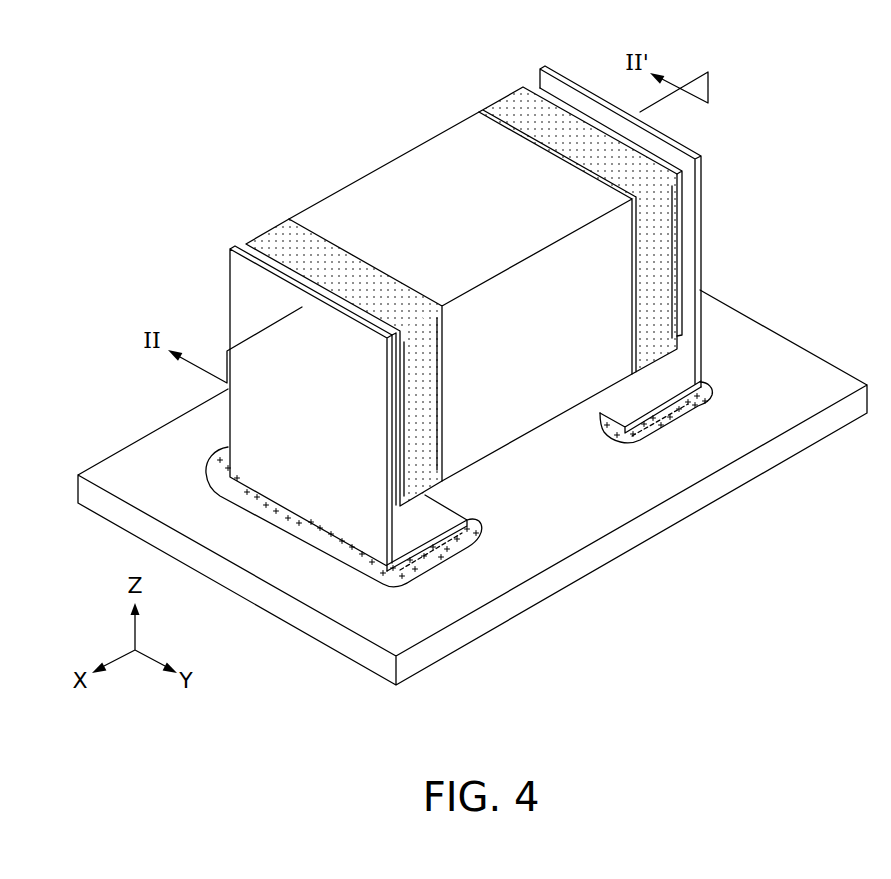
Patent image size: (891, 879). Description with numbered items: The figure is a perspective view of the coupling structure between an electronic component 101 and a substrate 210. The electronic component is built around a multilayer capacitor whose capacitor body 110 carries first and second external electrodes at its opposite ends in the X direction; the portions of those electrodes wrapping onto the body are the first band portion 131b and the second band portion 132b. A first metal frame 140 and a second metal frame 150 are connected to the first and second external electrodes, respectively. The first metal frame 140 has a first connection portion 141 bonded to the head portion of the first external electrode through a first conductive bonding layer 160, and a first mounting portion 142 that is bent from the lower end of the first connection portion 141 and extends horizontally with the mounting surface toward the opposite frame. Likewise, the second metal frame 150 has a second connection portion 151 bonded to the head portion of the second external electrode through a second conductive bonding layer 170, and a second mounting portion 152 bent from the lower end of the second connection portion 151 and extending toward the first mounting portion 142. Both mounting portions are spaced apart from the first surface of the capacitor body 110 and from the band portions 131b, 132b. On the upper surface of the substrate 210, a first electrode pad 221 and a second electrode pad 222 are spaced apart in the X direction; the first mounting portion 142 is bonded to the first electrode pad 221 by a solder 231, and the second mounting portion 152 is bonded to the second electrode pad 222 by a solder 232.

The multilayer ceramic electronic component 101 is at (452, 269).
The capacitor body 110 is at (375, 200).
The first band portion 131b is at (277, 243).
The second band portion 132b is at (512, 103).
The first metal frame 140 is at (321, 462).
The first connection portion 141 is at (242, 427).
The first mounting portion 142 is at (432, 522).
The second metal frame 150 is at (686, 305).
The second connection portion 151 is at (684, 347).
The second mounting portion 152 is at (655, 388).
The first conductive bonding layer 160 is at (395, 470).
The second conductive bonding layer 170 is at (680, 307).
The substrate 210 is at (605, 508).
The first electrode pad 221 is at (407, 563).
The second electrode pad 222 is at (650, 430).
The solder 231 is at (388, 580).
The solder 232 is at (712, 393).